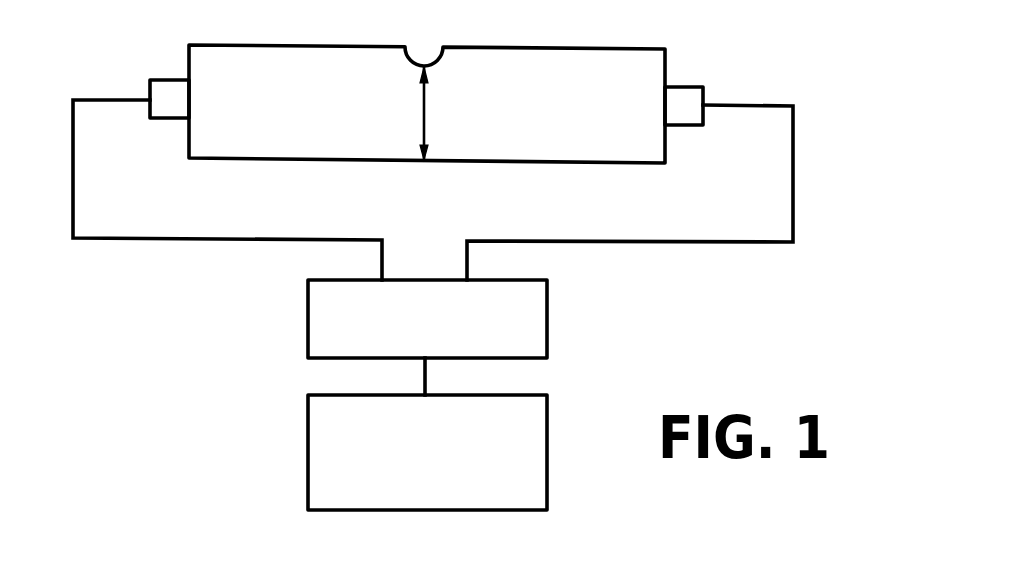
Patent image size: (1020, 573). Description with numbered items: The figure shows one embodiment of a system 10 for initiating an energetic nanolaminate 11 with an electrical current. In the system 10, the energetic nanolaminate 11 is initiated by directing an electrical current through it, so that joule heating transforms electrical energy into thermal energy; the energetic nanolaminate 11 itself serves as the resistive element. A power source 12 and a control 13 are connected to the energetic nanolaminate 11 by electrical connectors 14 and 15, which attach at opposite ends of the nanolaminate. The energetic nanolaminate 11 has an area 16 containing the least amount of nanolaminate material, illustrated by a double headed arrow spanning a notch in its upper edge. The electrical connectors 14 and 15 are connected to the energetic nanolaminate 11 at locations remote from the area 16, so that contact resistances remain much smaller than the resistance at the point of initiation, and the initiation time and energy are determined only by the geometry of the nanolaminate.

The system for initiating an energetic nanolaminate 10 is at (725, 62).
The energetic nanolaminate 11 is at (626, 95).
The power source 12 is at (308, 457).
The control 13 is at (308, 318).
The electrical connector 14 is at (161, 118).
The electrical connector 15 is at (693, 125).
The area containing the least amount of nanolaminate material 16 is at (427, 128).